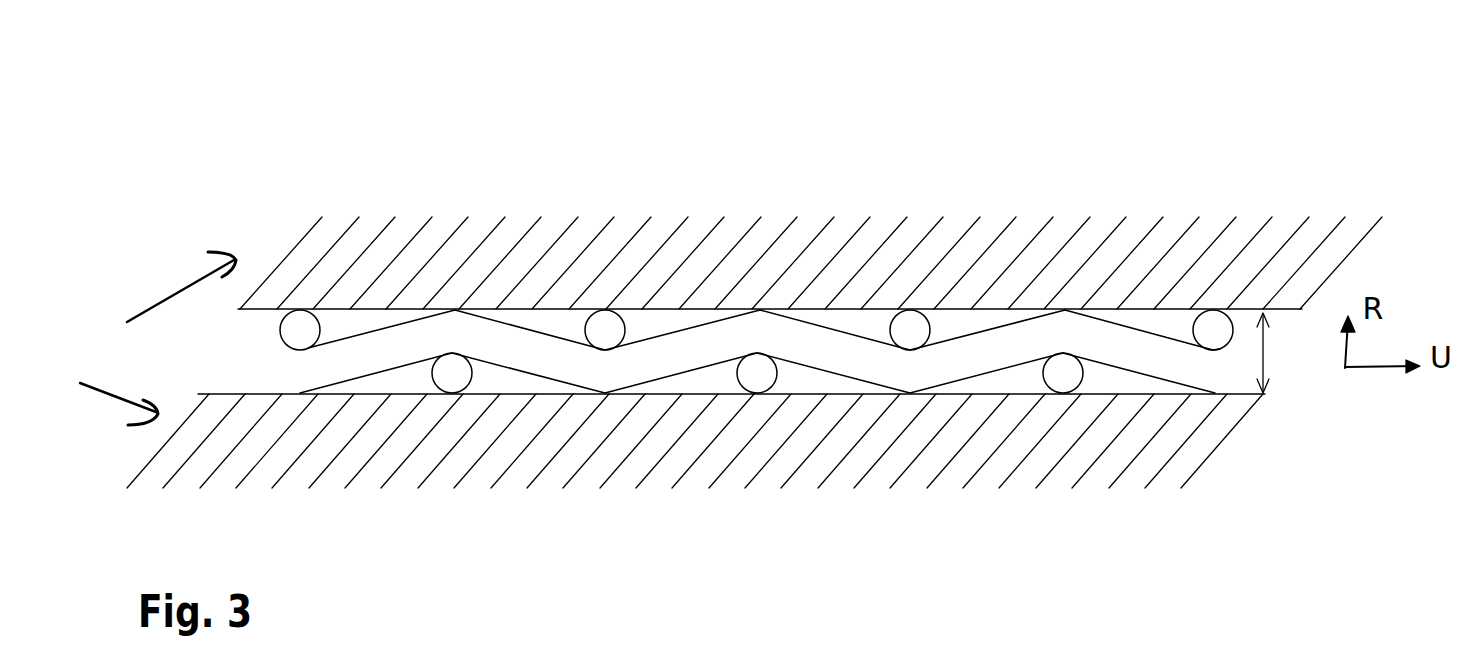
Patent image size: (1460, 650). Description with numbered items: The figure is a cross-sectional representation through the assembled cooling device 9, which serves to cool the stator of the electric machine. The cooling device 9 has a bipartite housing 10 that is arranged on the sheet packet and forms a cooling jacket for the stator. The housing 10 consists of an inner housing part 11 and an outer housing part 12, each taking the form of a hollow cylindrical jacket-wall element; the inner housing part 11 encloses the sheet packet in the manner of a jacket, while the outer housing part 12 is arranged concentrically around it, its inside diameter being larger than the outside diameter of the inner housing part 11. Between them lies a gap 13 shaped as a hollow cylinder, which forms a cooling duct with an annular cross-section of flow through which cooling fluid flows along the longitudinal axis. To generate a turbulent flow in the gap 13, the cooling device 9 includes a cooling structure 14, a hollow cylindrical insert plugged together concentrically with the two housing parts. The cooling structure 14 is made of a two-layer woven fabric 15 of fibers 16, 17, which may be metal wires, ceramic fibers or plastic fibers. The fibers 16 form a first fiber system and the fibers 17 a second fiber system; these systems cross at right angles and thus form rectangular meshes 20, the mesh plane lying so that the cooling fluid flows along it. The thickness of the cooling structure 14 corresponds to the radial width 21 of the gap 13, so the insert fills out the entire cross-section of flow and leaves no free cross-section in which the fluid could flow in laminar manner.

The cooling device 9 is at (752, 253).
The housing 10 is at (157, 338).
The inner housing part 11 is at (1223, 447).
The outer housing part 12 is at (1343, 254).
The gap 13 is at (738, 217).
The cooling structure 14 is at (841, 313).
The woven fabric 15 is at (962, 353).
The fibers 16 is at (686, 332).
The fibers 17 is at (603, 310).
The meshes 20 is at (412, 377).
The radial width 21 is at (1265, 365).